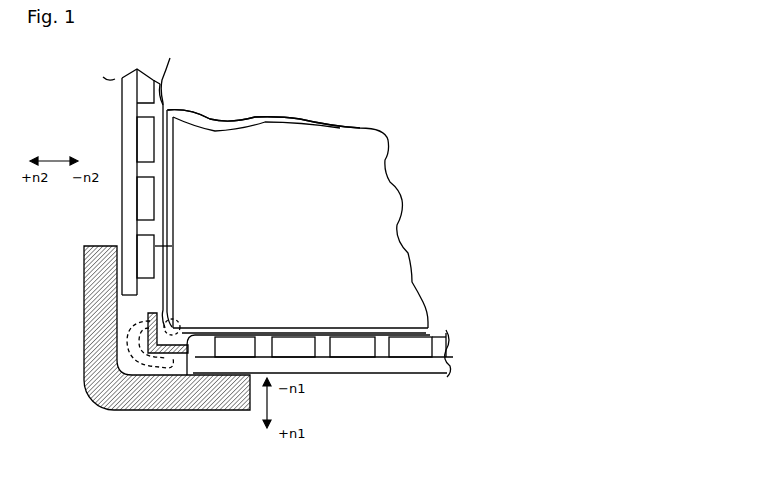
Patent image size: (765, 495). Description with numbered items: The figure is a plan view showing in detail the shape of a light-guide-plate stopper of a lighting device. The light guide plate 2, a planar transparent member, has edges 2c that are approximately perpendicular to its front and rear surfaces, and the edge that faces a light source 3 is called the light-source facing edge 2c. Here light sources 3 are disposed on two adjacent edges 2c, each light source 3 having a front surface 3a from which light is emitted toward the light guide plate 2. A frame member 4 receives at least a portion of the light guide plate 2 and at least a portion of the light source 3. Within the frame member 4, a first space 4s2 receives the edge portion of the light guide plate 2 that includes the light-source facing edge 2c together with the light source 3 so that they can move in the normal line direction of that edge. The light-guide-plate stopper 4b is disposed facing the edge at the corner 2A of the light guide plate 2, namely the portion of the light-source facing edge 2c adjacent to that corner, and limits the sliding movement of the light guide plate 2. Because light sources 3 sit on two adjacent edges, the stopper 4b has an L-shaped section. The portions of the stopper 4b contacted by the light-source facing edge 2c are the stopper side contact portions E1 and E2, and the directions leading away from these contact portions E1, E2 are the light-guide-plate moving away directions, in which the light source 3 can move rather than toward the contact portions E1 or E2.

The light guide plate 2 is at (402, 196).
The corner of the light guide plate 2A is at (177, 318).
The light-source facing edge 2c is at (227, 122).
The light source 3 is at (118, 106).
The front surface of the light source 3a is at (163, 100).
The stopper side contact portion E1 is at (431, 332).
The stopper side contact portion E2 is at (164, 103).
The frame member 4 is at (112, 410).
The light-guide-plate stopper 4b is at (188, 350).
The first space 4s2 is at (147, 410).